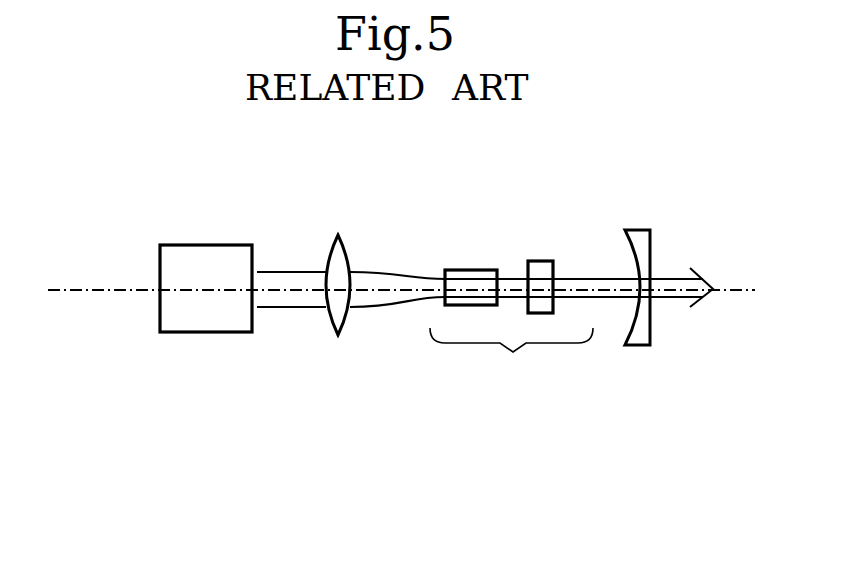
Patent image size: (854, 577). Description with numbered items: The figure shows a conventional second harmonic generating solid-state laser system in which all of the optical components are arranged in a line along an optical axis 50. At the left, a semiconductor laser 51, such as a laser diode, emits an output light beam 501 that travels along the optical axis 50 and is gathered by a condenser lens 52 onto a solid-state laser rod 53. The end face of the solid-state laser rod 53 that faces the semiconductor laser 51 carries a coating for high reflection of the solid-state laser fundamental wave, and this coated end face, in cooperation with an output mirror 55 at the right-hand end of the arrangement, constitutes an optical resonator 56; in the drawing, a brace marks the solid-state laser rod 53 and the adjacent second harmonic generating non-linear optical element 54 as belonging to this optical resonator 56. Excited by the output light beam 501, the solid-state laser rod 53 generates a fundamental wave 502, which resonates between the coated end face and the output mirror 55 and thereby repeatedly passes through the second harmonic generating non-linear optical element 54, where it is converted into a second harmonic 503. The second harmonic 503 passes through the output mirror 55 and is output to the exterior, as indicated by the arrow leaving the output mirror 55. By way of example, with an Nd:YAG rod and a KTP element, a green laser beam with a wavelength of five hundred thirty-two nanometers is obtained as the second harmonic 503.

The optical axis 50 is at (90, 290).
The semiconductor laser 51 is at (210, 263).
The condenser lens 52 is at (342, 255).
The solid-state laser rod 53 is at (445, 307).
The second harmonic generating non-linear optical element 54 is at (538, 268).
The output mirror 55 is at (633, 343).
The optical resonator 56 is at (511, 358).
The output light beam 501 is at (297, 295).
The fundamental wave 502 is at (602, 279).
The second harmonic 503 is at (677, 292).